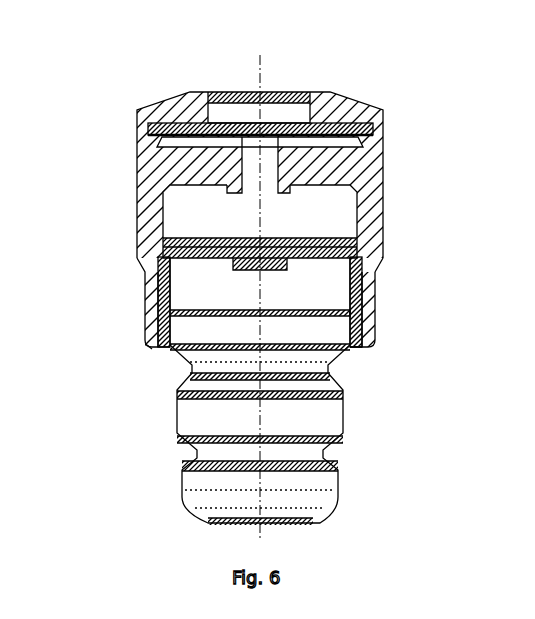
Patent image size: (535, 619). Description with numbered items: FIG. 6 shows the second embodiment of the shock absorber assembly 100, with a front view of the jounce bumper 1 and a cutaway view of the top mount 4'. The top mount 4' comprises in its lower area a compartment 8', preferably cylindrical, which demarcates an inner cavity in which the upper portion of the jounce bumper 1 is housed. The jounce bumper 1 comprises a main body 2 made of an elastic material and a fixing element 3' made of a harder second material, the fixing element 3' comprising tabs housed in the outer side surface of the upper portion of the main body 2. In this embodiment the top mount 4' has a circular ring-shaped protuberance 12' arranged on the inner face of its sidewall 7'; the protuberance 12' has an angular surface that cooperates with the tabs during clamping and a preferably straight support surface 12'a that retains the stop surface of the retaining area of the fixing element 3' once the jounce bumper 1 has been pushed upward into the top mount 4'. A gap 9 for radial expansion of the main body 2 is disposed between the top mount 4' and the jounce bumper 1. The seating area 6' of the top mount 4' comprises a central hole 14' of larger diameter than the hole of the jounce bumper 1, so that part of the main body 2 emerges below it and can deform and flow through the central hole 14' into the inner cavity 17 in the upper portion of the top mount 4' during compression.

The shock absorber assembly 100 is at (131, 64).
The jounce bumper 1 is at (267, 310).
The main body 2 is at (326, 410).
The fixing element 3' is at (260, 302).
The top mount 4' is at (267, 225).
The seating area 6' is at (306, 254).
The sidewall 7' is at (397, 309).
The compartment 8' is at (123, 348).
The gap 9 is at (359, 354).
The protuberance 12' is at (122, 297).
The support surface 12'a is at (422, 277).
The central hole 14' is at (219, 183).
The inner cavity 17 is at (326, 223).